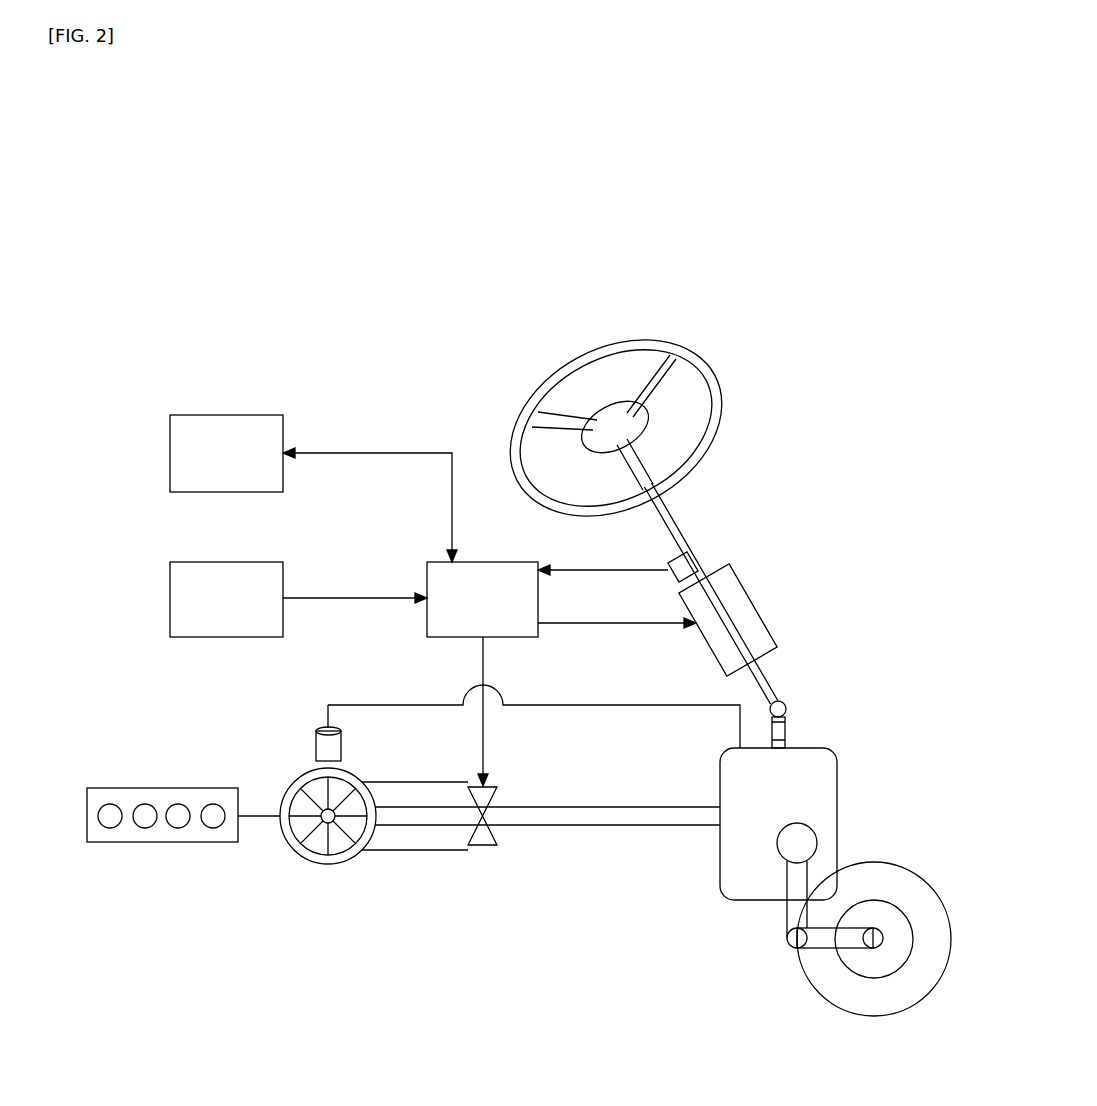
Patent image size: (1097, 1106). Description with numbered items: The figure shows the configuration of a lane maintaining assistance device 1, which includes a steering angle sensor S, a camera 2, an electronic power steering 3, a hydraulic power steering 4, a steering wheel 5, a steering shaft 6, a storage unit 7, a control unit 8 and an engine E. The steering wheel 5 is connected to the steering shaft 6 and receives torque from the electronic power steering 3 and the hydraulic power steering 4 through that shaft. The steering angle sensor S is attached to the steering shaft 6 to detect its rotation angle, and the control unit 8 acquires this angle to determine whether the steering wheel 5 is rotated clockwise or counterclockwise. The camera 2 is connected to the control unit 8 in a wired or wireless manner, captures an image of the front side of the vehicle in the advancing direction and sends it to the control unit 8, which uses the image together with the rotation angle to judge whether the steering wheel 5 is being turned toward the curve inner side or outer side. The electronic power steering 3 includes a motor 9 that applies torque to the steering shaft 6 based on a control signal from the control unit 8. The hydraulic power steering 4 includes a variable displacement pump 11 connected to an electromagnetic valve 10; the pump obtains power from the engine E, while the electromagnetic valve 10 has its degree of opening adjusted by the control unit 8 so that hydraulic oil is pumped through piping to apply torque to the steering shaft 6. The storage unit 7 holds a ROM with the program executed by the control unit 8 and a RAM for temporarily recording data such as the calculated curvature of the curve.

The lane maintaining assistance device 1 is at (668, 272).
The camera 2 is at (258, 562).
The electronic power steering 3 is at (790, 515).
The hydraulic power steering 4 is at (415, 905).
The steering wheel 5 is at (718, 366).
The steering shaft 6 is at (772, 680).
The storage unit 7 is at (258, 414).
The control unit 8 is at (518, 562).
The motor 9 is at (742, 572).
The electromagnetic valve 10 is at (498, 845).
The variable displacement pump 11 is at (292, 782).
The engine E is at (160, 787).
The steering angle sensor S is at (692, 557).